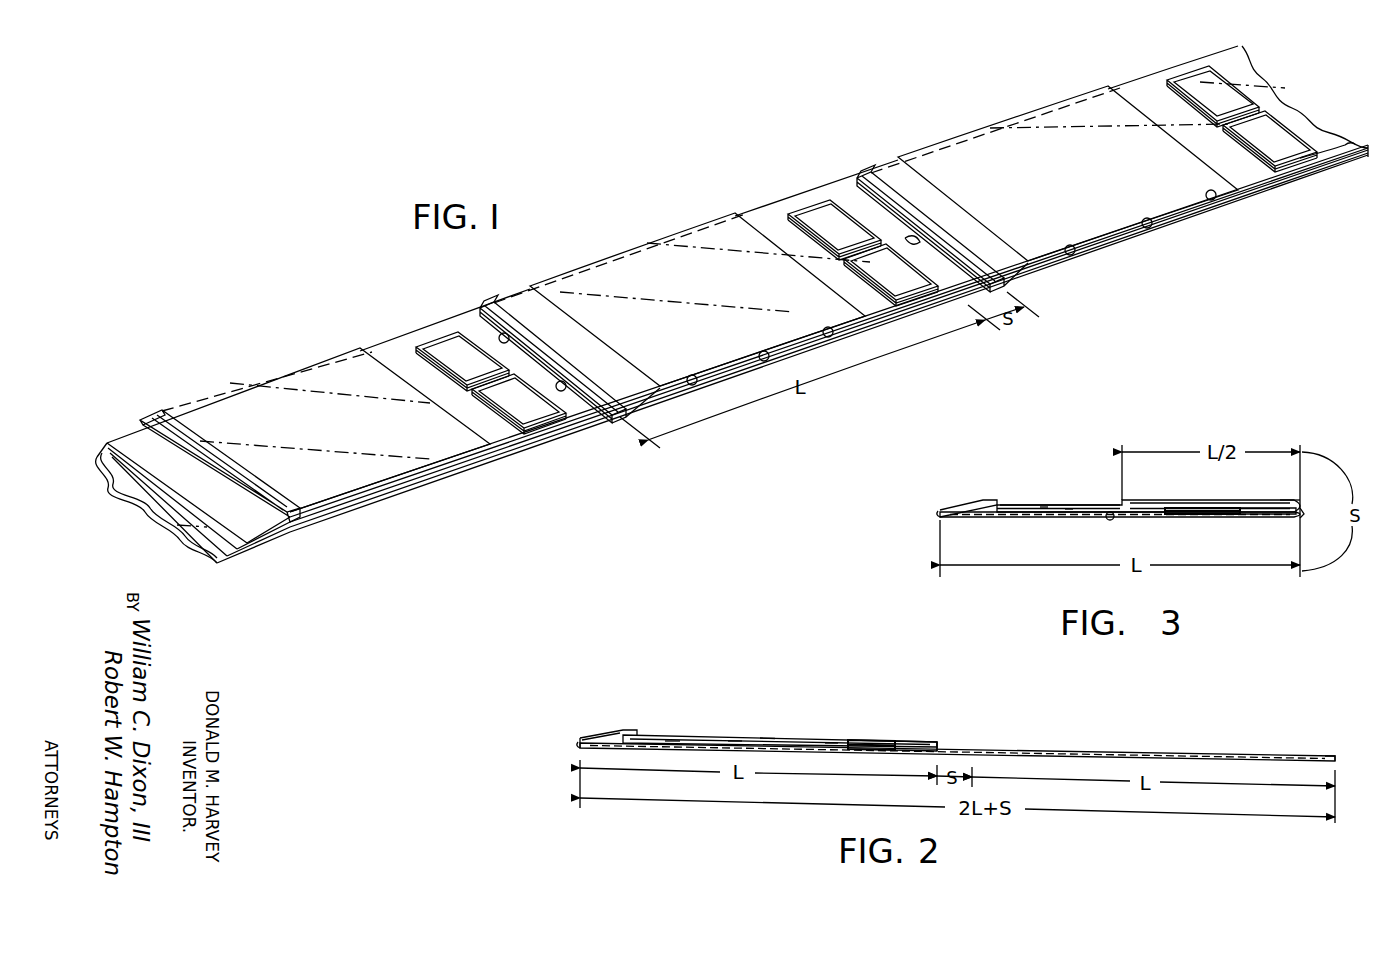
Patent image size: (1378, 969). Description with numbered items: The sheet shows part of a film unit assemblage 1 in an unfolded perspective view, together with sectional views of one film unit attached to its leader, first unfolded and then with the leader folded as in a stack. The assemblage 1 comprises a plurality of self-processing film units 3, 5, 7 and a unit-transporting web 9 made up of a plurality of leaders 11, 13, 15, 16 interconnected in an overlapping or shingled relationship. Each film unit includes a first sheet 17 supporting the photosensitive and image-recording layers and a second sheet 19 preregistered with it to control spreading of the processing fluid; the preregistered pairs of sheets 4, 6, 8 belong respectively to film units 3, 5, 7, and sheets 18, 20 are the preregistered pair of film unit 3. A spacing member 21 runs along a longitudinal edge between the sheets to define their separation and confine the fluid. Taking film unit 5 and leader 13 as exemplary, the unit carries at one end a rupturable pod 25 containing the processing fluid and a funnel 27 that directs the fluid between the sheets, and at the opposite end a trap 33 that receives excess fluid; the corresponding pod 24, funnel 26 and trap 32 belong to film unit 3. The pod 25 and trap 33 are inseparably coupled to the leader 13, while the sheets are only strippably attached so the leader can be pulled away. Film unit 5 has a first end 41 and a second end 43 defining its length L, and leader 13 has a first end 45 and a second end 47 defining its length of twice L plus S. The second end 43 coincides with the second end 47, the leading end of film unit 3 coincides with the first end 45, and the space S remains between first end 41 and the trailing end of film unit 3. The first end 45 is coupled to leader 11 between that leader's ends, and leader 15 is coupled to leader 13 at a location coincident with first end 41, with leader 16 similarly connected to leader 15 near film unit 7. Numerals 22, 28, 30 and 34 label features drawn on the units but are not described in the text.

In FIG. 1, the film unit assemblage 1 is at (385, 298).
In FIG. 1, the film unit 3 is at (972, 125).
In FIG. 1, the pair of preregistered sheets 4 is at (1050, 102).
In FIG. 1, the film unit 5 is at (628, 243).
In FIG. 3, the film unit 5 is at (1022, 500).
In FIG. 2, the film unit 5 is at (700, 736).
In FIG. 1, the pair of preregistered sheets 6 is at (590, 267).
In FIG. 3, the pair of preregistered sheets 6 is at (1015, 505).
In FIG. 2, the pair of preregistered sheets 6 is at (770, 739).
In FIG. 1, the film unit 7 is at (218, 392).
In FIG. 1, the pair of preregistered sheets 8 is at (285, 372).
In FIG. 1, the unit-transporting web 9 is at (1200, 226).
In FIG. 1, the leader 11 is at (1365, 165).
In FIG. 1, the leader 13 is at (1098, 256).
In FIG. 3, the leader 13 is at (1088, 511).
In FIG. 2, the leader 13 is at (1182, 751).
In FIG. 1, the leader 15 is at (605, 440).
In FIG. 1, the leader 16 is at (425, 504).
In FIG. 1, the first sheet 17 is at (764, 351).
In FIG. 3, the first sheet 17 is at (1043, 505).
In FIG. 2, the first sheet 17 is at (674, 741).
In FIG. 1, the sheet 18 is at (1145, 218).
In FIG. 1, the second sheet 19 is at (826, 327).
In FIG. 3, the second sheet 19 is at (1069, 507).
In FIG. 2, the second sheet 19 is at (737, 740).
In FIG. 1, the sheet 20 is at (1209, 190).
In FIG. 1, the spacing member 21 is at (693, 375).
In FIG. 3, the spacing member 21 is at (1110, 505).
In FIG. 2, the spacing member 21 is at (832, 742).
In FIG. 1, the loop 22 is at (1068, 245).
In FIG. 1, the pod 24 is at (1177, 68).
In FIG. 1, the rupturable pod 25 is at (817, 197).
In FIG. 3, the rupturable pod 25 is at (1250, 521).
In FIG. 2, the rupturable pod 25 is at (922, 740).
In FIG. 1, the funnel 26 is at (1147, 96).
In FIG. 1, the funnel 27 is at (776, 222).
In FIG. 3, the funnel 27 is at (1190, 516).
In FIG. 2, the funnel 27 is at (872, 741).
In FIG. 1, the pad 28 is at (449, 331).
In FIG. 1, the pad 30 is at (402, 351).
In FIG. 1, the trap 32 is at (865, 172).
In FIG. 1, the trap 33 is at (490, 300).
In FIG. 2, the trap 33 is at (619, 730).
In FIG. 1, the hinge flap 34 is at (150, 420).
In FIG. 1, the first end 41 is at (918, 240).
In FIG. 3, the first end 41 is at (1303, 518).
In FIG. 2, the first end 41 is at (942, 745).
In FIG. 1, the second end 43 is at (511, 337).
In FIG. 3, the second end 43 is at (940, 511).
In FIG. 2, the second end 43 is at (580, 738).
In FIG. 1, the first end 45 is at (1342, 169).
In FIG. 3, the first end 45 is at (1300, 505).
In FIG. 2, the first end 45 is at (1337, 758).
In FIG. 1, the second end 47 is at (566, 385).
In FIG. 3, the second end 47 is at (940, 515).
In FIG. 2, the second end 47 is at (580, 745).